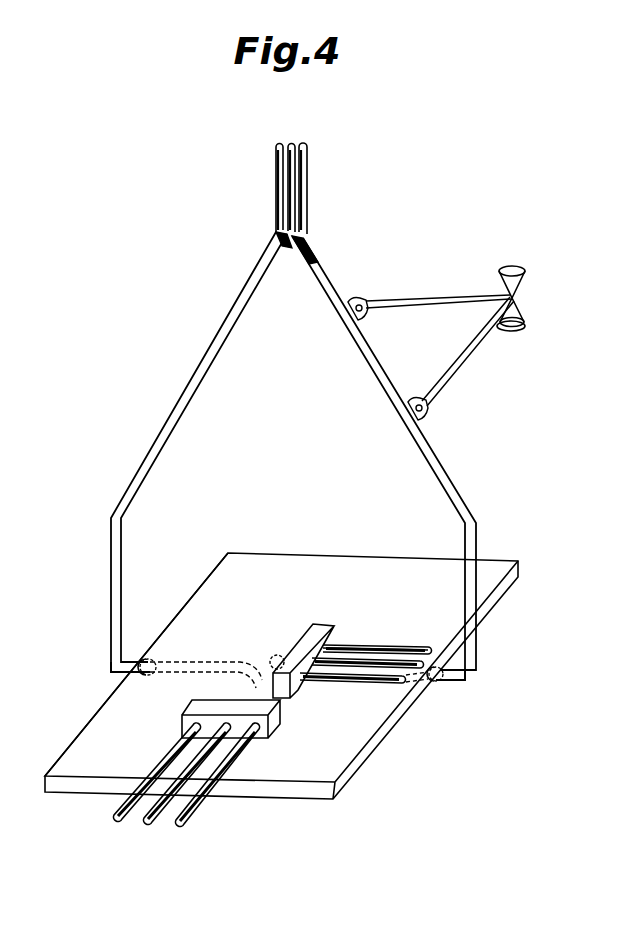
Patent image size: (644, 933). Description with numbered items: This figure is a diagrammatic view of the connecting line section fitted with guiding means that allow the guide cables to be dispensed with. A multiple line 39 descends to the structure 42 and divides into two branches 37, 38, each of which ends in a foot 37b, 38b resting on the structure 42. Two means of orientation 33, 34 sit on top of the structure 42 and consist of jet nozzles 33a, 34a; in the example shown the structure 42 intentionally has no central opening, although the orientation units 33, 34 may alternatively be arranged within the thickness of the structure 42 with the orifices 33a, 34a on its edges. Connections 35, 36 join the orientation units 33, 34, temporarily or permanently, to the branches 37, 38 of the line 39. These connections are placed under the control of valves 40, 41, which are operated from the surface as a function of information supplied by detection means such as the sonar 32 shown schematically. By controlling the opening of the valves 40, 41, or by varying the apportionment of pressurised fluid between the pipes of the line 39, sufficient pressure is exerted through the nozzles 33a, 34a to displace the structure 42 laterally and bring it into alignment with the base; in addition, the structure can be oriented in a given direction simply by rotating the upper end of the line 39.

The sonar 32 is at (513, 311).
The orientation unit 33 is at (182, 726).
The jet nozzles 33a is at (268, 740).
The orientation unit 34 is at (318, 630).
The jet nozzles 34a is at (304, 690).
The connection 35 is at (190, 670).
The connection 36 is at (272, 657).
The branch 37 is at (181, 414).
The left leg foot 37b is at (110, 667).
The branch 38 is at (445, 478).
The right leg foot 38b is at (478, 684).
The multiple line 39 is at (316, 185).
The valve 40 is at (437, 683).
The valve 41 is at (157, 660).
The structure 42 is at (485, 568).